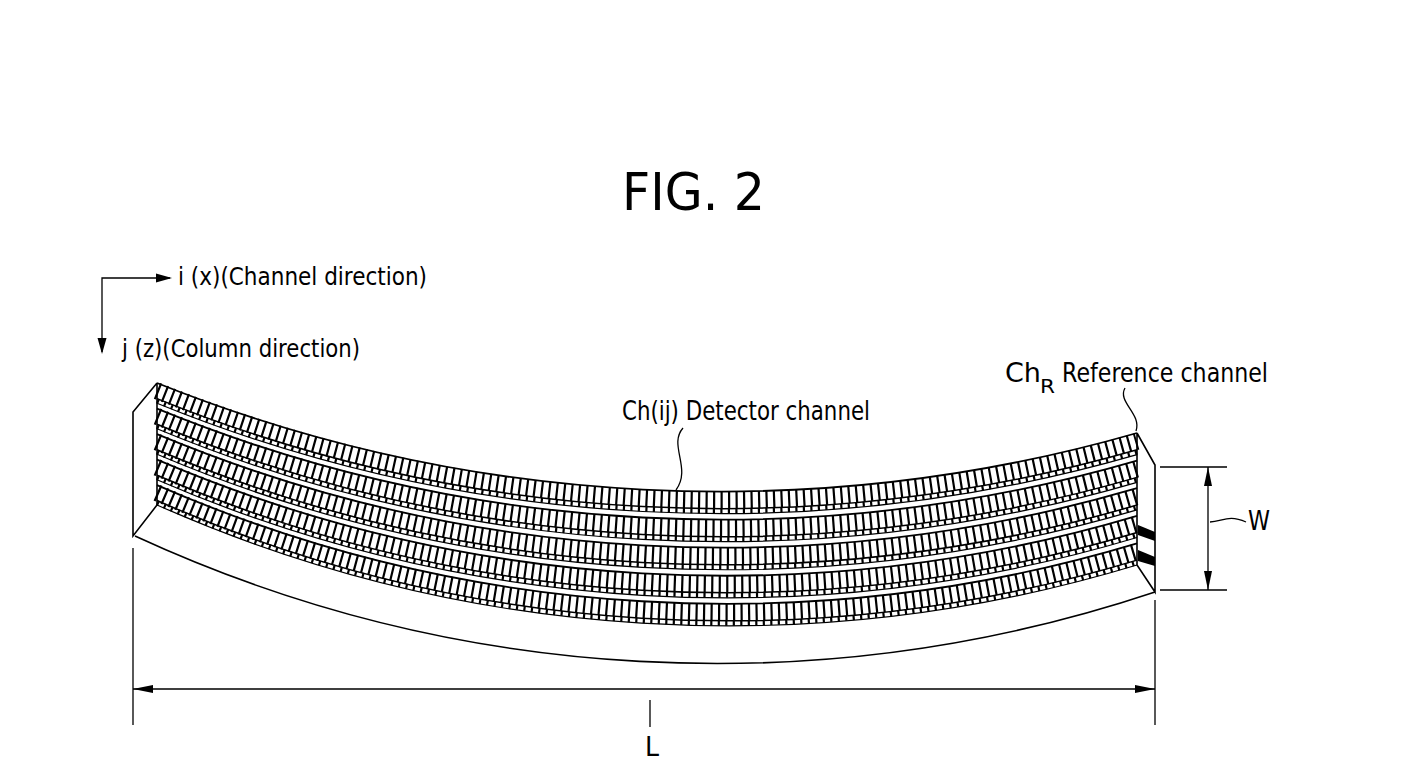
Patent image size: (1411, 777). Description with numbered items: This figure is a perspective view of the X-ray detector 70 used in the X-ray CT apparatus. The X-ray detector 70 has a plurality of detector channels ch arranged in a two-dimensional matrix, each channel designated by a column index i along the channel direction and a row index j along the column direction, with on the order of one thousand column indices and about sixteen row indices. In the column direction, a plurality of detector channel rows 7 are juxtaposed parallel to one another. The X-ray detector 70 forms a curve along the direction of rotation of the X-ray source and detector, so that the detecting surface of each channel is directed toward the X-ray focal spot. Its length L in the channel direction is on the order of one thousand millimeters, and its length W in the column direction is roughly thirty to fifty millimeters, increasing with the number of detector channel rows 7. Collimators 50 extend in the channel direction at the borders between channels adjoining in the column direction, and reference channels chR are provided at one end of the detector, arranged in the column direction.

The X-ray detector 70 is at (933, 437).
The collimators 50 is at (216, 495).
The detector channel rows 7 is at (1148, 541).